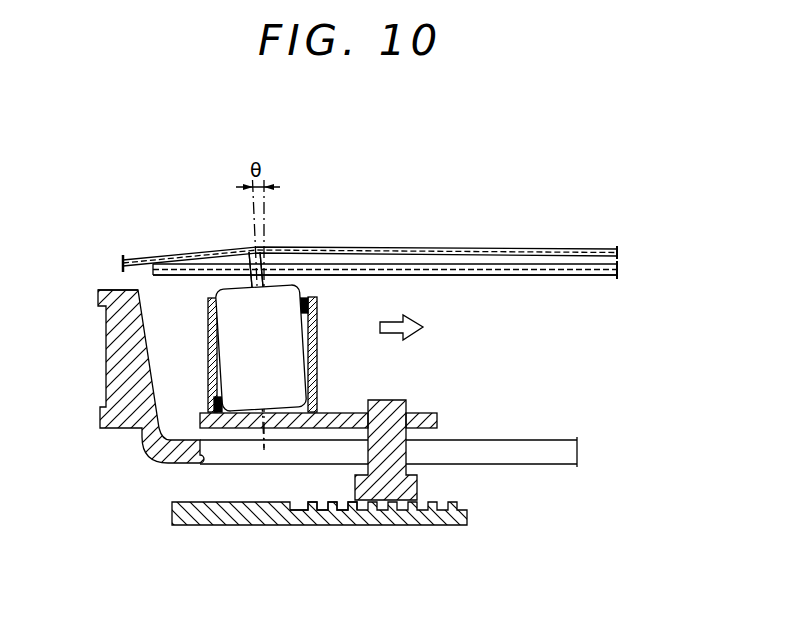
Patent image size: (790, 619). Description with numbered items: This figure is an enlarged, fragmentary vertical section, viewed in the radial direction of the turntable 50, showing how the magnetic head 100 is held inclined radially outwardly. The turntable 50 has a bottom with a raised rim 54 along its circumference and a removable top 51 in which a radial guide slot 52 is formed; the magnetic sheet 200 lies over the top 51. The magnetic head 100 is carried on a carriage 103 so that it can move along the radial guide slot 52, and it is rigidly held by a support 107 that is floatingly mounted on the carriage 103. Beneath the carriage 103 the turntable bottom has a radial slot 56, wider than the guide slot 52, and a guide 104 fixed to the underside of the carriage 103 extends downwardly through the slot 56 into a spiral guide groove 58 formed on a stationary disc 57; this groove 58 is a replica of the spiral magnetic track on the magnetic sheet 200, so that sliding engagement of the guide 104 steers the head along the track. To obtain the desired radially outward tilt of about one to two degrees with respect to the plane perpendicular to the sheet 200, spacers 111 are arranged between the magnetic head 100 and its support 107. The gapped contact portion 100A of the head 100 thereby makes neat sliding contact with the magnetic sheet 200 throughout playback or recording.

The turntable 50 is at (117, 297).
The top 51 is at (617, 268).
The radial guide slot 52 is at (540, 268).
The raised rim 54 is at (110, 369).
The radial slot 56 is at (213, 460).
The stationary disc 57 is at (212, 517).
The spiral guide groove 58 is at (308, 504).
The magnetic head 100 is at (283, 287).
The gapped contact portion 100A is at (250, 257).
The carriage 103 is at (337, 412).
The guide 104 is at (407, 483).
The support 107 is at (207, 373).
The spacers 111 is at (200, 415).
The magnetic sheet 200 is at (392, 250).